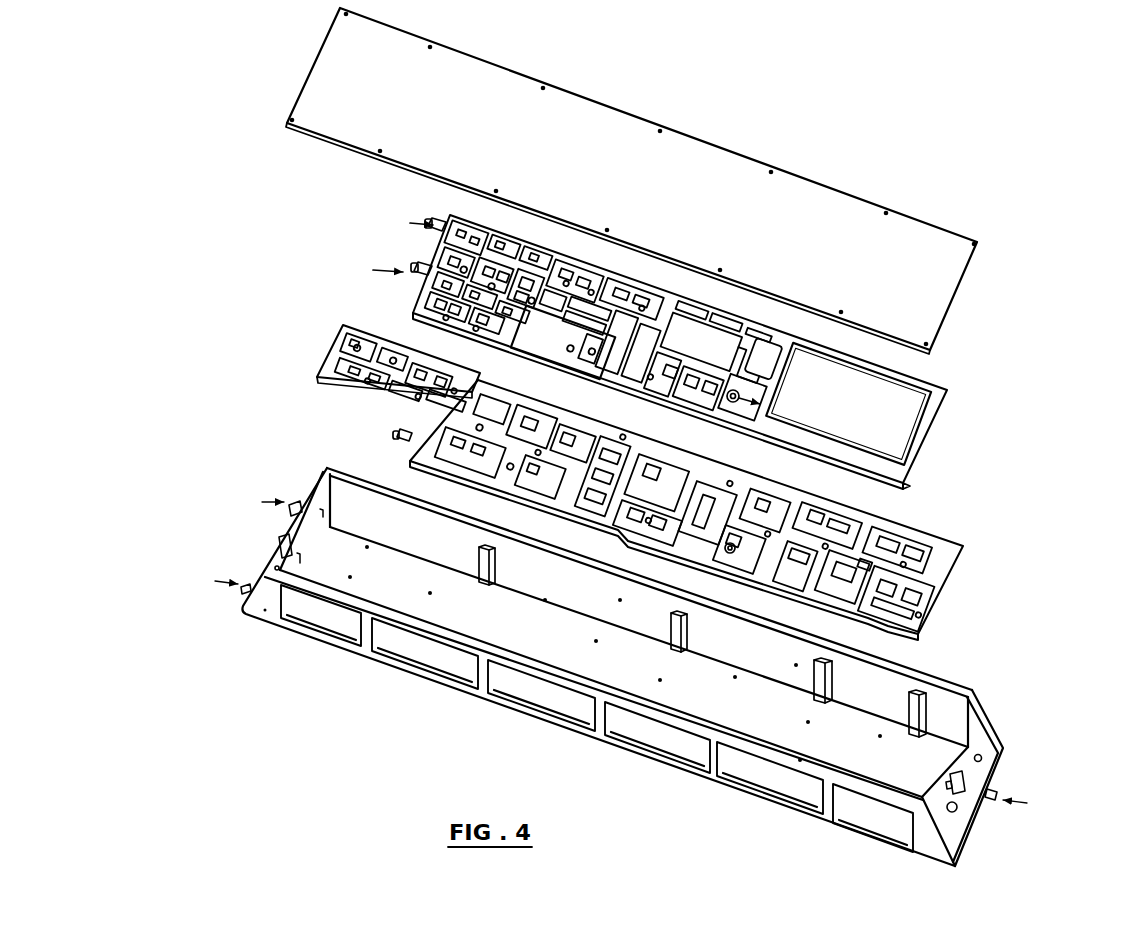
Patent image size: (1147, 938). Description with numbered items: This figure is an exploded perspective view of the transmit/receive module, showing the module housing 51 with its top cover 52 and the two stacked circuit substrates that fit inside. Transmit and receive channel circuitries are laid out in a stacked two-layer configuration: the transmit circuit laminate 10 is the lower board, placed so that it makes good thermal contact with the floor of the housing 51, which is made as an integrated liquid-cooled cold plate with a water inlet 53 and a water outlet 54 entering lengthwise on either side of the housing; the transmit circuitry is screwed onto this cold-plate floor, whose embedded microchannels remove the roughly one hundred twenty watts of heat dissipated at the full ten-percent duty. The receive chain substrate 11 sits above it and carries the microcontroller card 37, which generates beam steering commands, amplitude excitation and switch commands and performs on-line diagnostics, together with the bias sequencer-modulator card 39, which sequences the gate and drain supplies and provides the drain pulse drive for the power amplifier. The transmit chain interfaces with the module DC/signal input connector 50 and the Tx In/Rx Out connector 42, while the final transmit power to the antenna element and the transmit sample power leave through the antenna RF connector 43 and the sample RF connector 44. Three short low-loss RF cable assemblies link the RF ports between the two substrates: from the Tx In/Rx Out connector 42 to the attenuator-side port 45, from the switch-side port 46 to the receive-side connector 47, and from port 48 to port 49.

The transmit circuit laminate 10 is at (709, 510).
The receive chain substrate 11 is at (637, 352).
The microcontroller card 37 is at (848, 404).
The bias sequencer-modulator card 39 is at (563, 343).
The Tx In/Rx Out connector J1 42 is at (286, 493).
The RF connector J2 43 is at (961, 809).
The RF connector J3 44 is at (967, 774).
The RF port 45 is at (407, 285).
The RF port 46 is at (430, 238).
The connector J6 47 is at (395, 433).
The RF port 48 is at (730, 556).
The RF port 49 is at (907, 460).
The DC/signal input connector 50 is at (277, 547).
The T/R module housing 51 is at (610, 669).
The top cover 52 is at (984, 242).
The water inlet 53 is at (1001, 790).
The water outlet 54 is at (238, 593).